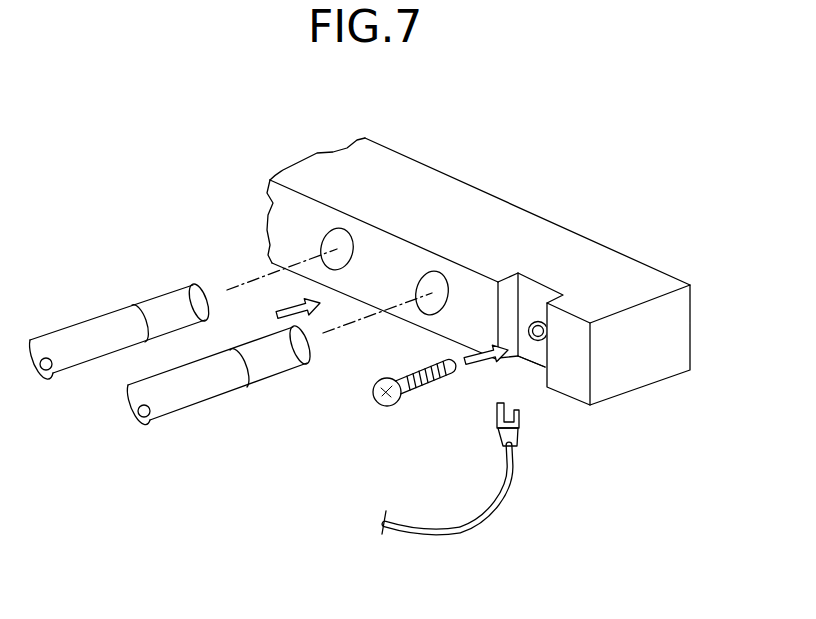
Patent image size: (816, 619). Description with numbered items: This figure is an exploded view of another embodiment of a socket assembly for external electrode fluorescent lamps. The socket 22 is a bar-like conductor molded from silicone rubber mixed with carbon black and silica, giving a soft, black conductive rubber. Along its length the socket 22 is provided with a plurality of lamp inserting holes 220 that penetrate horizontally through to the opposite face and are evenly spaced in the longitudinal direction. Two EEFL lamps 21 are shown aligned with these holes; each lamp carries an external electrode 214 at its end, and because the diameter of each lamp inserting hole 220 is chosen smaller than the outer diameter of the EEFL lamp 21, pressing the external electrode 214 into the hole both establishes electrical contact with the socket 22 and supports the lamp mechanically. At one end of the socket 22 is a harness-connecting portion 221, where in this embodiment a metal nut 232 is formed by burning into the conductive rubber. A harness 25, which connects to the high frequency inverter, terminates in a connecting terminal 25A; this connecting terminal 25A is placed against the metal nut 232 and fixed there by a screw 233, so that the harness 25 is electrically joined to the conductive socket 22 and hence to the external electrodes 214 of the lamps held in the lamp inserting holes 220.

The EEFL lamp 21 is at (95, 330).
The external electrode 214 is at (172, 300).
The socket 22 is at (670, 368).
The lamp inserting holes 220 is at (432, 272).
The harness-connecting portion 221 is at (535, 355).
The metal nut 232 is at (540, 318).
The screw 233 is at (415, 392).
The harness 25 is at (506, 512).
The connecting terminal 25A is at (518, 420).